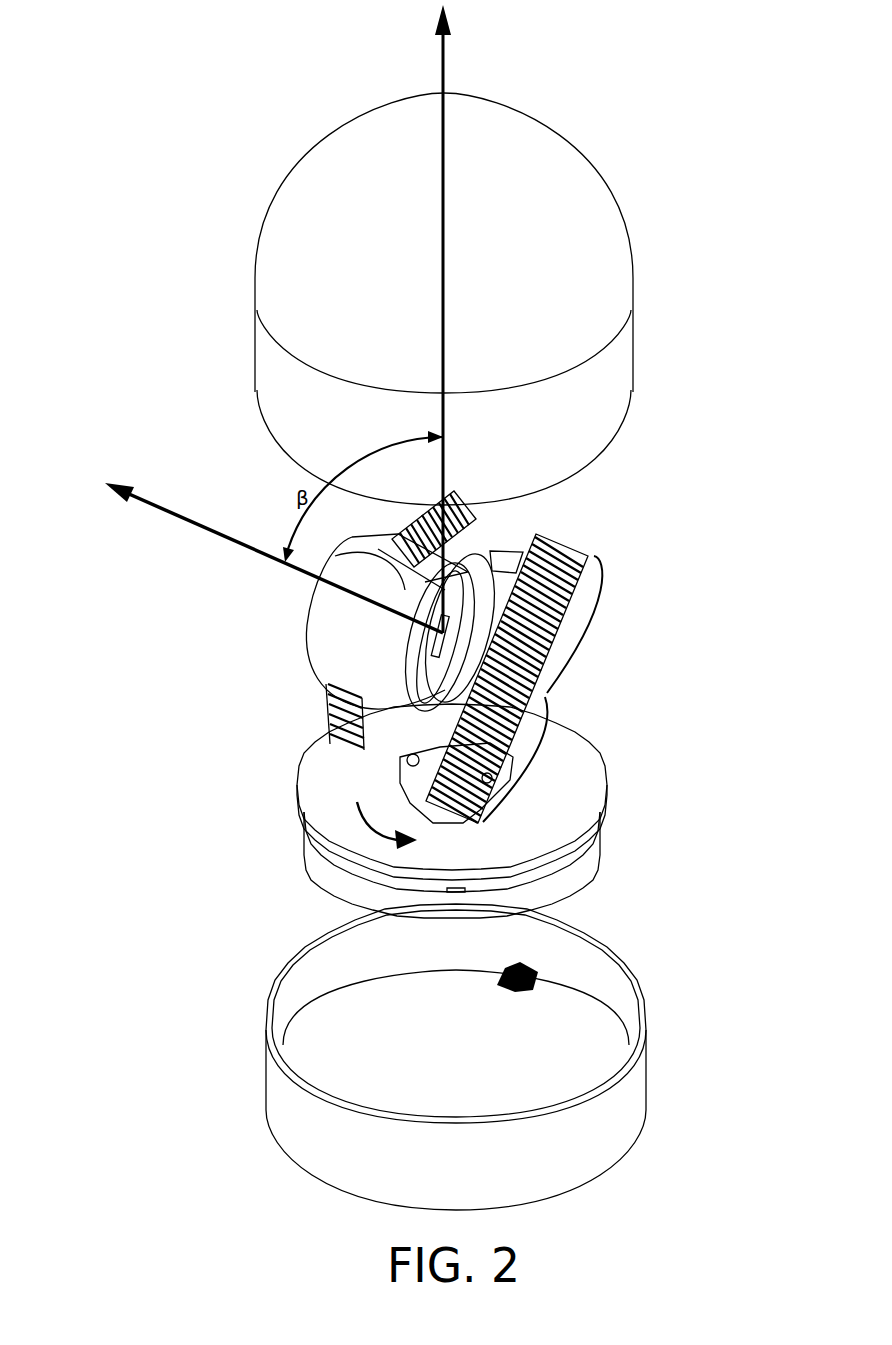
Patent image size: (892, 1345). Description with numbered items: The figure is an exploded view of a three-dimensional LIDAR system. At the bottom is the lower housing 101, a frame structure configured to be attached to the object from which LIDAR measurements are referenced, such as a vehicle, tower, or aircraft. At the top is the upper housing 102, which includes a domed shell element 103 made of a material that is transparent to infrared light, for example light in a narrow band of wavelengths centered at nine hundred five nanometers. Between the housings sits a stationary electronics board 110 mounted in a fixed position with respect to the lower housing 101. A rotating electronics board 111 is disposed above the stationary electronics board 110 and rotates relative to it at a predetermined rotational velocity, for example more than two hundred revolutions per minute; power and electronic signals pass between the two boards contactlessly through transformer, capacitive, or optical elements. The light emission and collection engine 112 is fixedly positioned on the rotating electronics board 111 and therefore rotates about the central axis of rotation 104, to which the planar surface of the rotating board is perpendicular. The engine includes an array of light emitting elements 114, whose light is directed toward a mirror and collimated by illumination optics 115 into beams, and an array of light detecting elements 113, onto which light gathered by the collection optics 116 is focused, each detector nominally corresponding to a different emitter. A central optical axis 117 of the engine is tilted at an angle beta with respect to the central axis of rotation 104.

The lower housing 101 is at (641, 1074).
The upper housing 102 is at (510, 299).
The domed shell element 103 is at (353, 226).
The central axis of rotation 104 is at (443, 65).
The stationary electronics board 110 is at (302, 838).
The rotating electronics board 111 is at (297, 786).
The light emission and collection engine 112 is at (660, 512).
The array of light detecting elements 113 is at (547, 694).
The array of light emitting elements 114 is at (328, 707).
The illumination optics 115 is at (320, 627).
The collection optics 116 is at (405, 654).
The central optical axis 117 is at (175, 518).